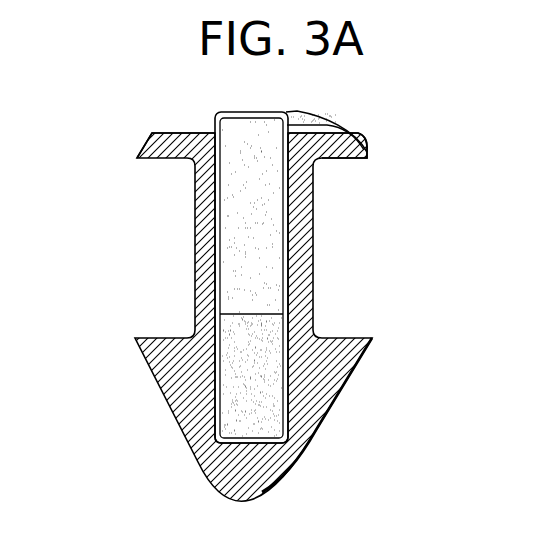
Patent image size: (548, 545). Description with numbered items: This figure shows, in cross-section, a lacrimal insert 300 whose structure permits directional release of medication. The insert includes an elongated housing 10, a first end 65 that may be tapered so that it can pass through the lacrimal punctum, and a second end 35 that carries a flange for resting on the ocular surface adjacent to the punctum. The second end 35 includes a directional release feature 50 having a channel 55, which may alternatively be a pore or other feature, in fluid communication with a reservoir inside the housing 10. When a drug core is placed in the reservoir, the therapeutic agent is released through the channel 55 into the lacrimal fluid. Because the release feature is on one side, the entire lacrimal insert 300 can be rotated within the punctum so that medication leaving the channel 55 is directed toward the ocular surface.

The lacrimal insert 300 is at (135, 254).
The elongated housing 10 is at (303, 243).
The second end 35 is at (146, 143).
The directional release feature 50 is at (325, 118).
The channel 55 is at (369, 147).
The first end 65 is at (176, 425).